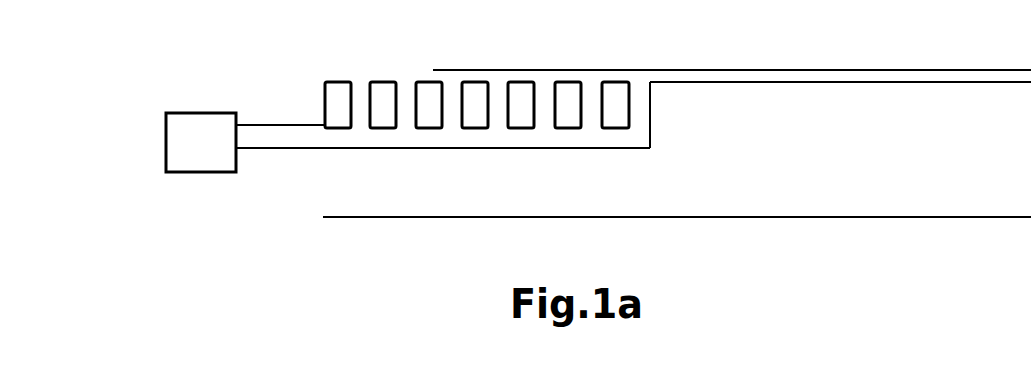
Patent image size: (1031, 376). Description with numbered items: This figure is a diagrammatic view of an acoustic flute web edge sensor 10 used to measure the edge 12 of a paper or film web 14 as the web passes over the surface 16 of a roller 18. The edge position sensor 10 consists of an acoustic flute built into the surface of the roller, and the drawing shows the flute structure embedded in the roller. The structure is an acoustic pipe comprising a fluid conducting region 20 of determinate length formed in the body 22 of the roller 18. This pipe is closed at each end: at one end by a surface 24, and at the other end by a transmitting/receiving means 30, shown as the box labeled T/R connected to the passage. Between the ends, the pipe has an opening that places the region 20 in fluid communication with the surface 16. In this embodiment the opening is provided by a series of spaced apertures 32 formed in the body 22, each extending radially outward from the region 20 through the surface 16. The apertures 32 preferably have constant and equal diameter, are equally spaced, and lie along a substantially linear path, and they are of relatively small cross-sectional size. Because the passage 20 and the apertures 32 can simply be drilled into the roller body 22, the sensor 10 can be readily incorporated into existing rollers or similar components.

The sensor 10 is at (347, 60).
The edge 12 is at (440, 70).
The web 14 is at (635, 70).
The surface 16 is at (818, 82).
The roller 18 is at (976, 92).
The fluid conducting region 20 is at (389, 141).
The body 22 is at (330, 100).
The surface 24 is at (650, 150).
The transmitting/receiving means 30 is at (193, 172).
The apertures 32 is at (542, 80).